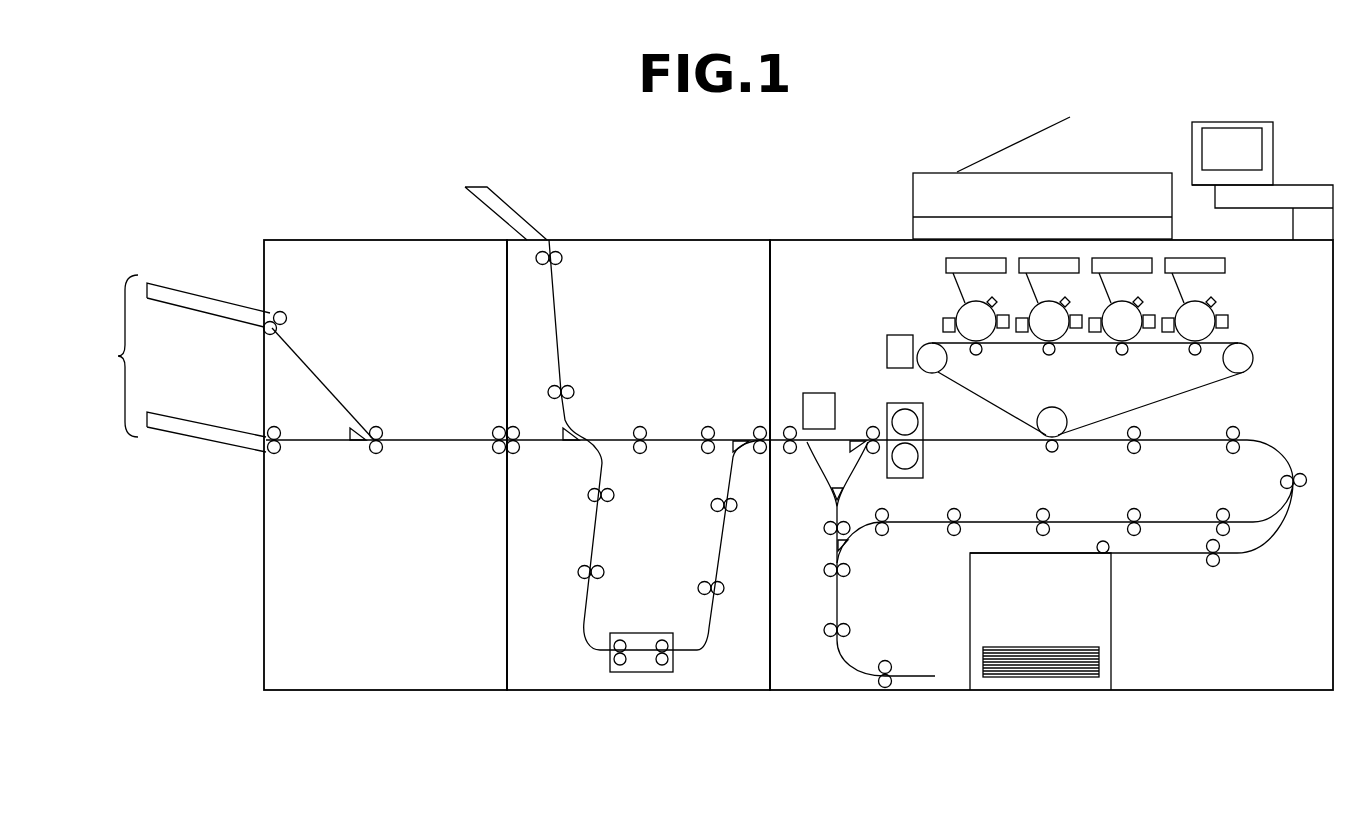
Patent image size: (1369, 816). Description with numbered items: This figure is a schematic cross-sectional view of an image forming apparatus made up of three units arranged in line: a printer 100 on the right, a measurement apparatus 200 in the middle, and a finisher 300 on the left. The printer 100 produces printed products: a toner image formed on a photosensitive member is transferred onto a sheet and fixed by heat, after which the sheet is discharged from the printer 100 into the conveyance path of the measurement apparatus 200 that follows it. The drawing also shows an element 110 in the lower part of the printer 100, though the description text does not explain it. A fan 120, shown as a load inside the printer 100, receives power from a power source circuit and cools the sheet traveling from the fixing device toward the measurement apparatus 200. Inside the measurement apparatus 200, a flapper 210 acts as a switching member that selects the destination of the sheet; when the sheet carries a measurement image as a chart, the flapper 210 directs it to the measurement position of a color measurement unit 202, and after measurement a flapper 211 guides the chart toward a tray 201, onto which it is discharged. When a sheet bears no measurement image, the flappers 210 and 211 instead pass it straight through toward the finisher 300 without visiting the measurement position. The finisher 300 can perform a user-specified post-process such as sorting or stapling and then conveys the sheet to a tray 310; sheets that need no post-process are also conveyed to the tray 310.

The printer 100 is at (1203, 692).
The sheet storage / paper cassette 110 is at (1047, 647).
The fan 120 is at (818, 392).
The measurement apparatus 200 is at (653, 692).
The tray 201 is at (513, 205).
The color measurement unit 202 is at (643, 633).
The flapper 210 is at (727, 438).
The flapper 211 is at (562, 433).
The finisher 300 is at (383, 692).
The tray 310 is at (177, 364).